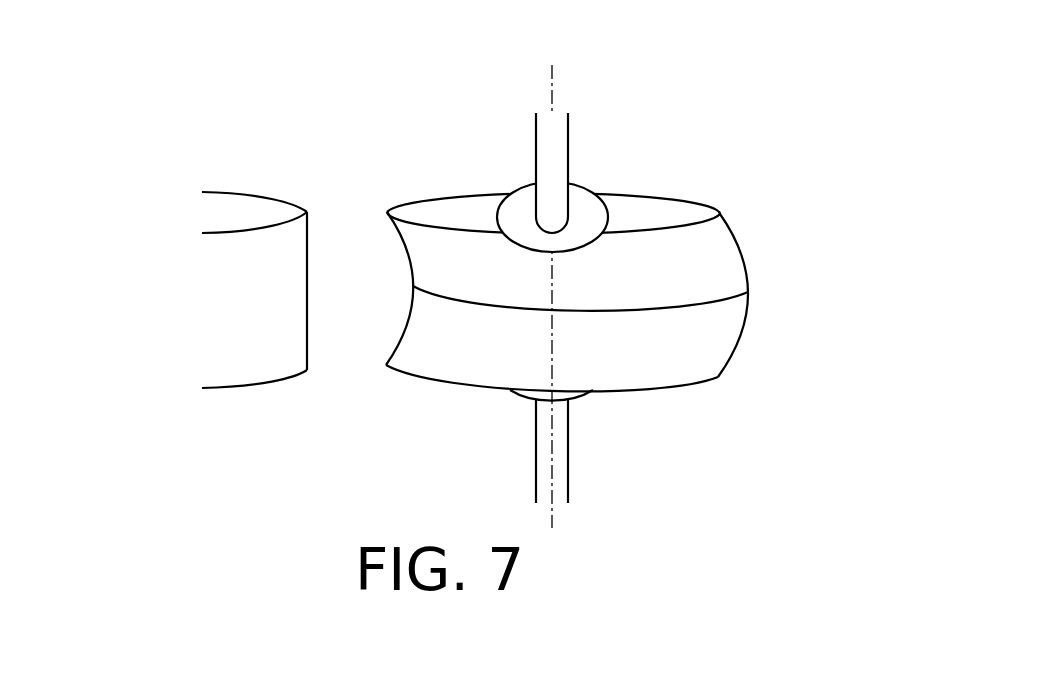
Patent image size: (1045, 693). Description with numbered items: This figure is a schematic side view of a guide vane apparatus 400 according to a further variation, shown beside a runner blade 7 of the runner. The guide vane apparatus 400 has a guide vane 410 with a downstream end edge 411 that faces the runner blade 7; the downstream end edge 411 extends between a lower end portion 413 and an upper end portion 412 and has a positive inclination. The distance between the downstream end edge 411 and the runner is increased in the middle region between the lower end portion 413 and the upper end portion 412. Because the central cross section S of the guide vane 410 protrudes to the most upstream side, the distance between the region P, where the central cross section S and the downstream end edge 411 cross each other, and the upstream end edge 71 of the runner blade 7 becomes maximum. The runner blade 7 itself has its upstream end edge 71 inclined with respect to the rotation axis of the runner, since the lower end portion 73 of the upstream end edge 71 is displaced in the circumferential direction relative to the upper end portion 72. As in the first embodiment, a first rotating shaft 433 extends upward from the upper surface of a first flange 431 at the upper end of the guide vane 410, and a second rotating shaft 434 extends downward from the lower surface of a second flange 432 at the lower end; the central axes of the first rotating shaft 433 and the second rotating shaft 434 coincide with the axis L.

The runner blade 7 is at (287, 293).
The upstream end edge 71 is at (308, 288).
The upper end portion 72 is at (307, 211).
The lower end portion 73 is at (307, 371).
The guide vane apparatus 400 is at (574, 268).
The guide vane 410 is at (549, 293).
The downstream end edge 411 is at (410, 267).
The upper end portion 412 is at (387, 211).
The lower end portion 413 is at (386, 367).
The first flange 431 is at (605, 202).
The second flange 432 is at (525, 400).
The first rotating shaft 433 is at (568, 150).
The second rotating shaft 434 is at (568, 460).
The region P is at (416, 293).
The central cross section S is at (700, 298).
The axis L is at (553, 77).